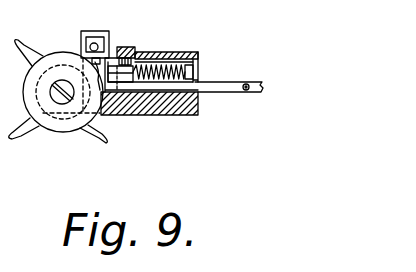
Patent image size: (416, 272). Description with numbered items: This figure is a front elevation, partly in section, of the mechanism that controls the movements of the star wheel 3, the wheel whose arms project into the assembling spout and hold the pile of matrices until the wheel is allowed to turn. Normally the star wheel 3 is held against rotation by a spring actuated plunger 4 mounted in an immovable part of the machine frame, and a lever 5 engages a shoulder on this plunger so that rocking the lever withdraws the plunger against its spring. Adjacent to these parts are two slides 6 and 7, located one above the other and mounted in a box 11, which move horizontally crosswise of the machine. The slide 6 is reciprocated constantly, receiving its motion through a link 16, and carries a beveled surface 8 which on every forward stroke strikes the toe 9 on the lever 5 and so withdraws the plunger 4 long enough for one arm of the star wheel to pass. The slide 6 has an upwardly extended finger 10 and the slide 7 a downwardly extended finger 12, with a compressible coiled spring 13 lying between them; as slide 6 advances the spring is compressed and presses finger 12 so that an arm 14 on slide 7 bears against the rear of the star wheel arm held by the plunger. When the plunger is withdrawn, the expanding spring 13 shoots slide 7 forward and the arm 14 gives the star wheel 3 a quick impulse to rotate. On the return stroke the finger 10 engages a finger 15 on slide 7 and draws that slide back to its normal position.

The star wheel 3 is at (58, 95).
The spring actuated plunger 4 is at (82, 45).
The lever 5 is at (96, 60).
The slide 6 is at (237, 83).
The slide 7 is at (178, 53).
The beveled surface 8 is at (117, 100).
The toe 9 is at (97, 85).
The finger 10 is at (190, 93).
The box 11 is at (199, 107).
The finger 12 is at (135, 115).
The compressible coiled spring 13 is at (167, 80).
The arm 14 is at (125, 48).
The finger 15 is at (200, 74).
The link 16 is at (258, 81).